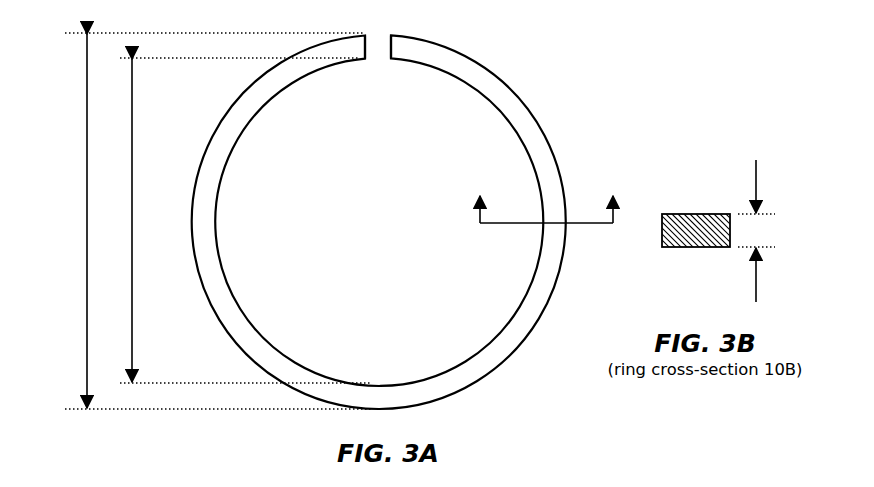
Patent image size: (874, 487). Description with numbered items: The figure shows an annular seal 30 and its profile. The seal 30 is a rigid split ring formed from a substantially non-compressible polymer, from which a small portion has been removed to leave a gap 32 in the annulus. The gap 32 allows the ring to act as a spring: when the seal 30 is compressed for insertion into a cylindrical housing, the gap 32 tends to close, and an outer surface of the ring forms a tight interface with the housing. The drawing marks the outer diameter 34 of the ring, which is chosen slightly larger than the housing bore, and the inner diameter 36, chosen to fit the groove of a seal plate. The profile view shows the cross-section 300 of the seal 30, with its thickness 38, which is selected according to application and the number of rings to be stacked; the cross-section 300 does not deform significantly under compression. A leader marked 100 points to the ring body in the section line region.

In FIG. 3A, the annular seal 30 is at (495, 92).
In FIG. 3B, the annular seal 30 is at (715, 214).
In FIG. 3A, the gap 32 is at (383, 57).
In FIG. 3A, the outer diameter 34 is at (85, 196).
In FIG. 3A, the inner diameter 36 is at (135, 120).
In FIG. 3A, the ring body 100 is at (547, 223).
In FIG. 3B, the cross-section 300 is at (681, 233).
In FIG. 3B, the thickness 38 is at (756, 286).